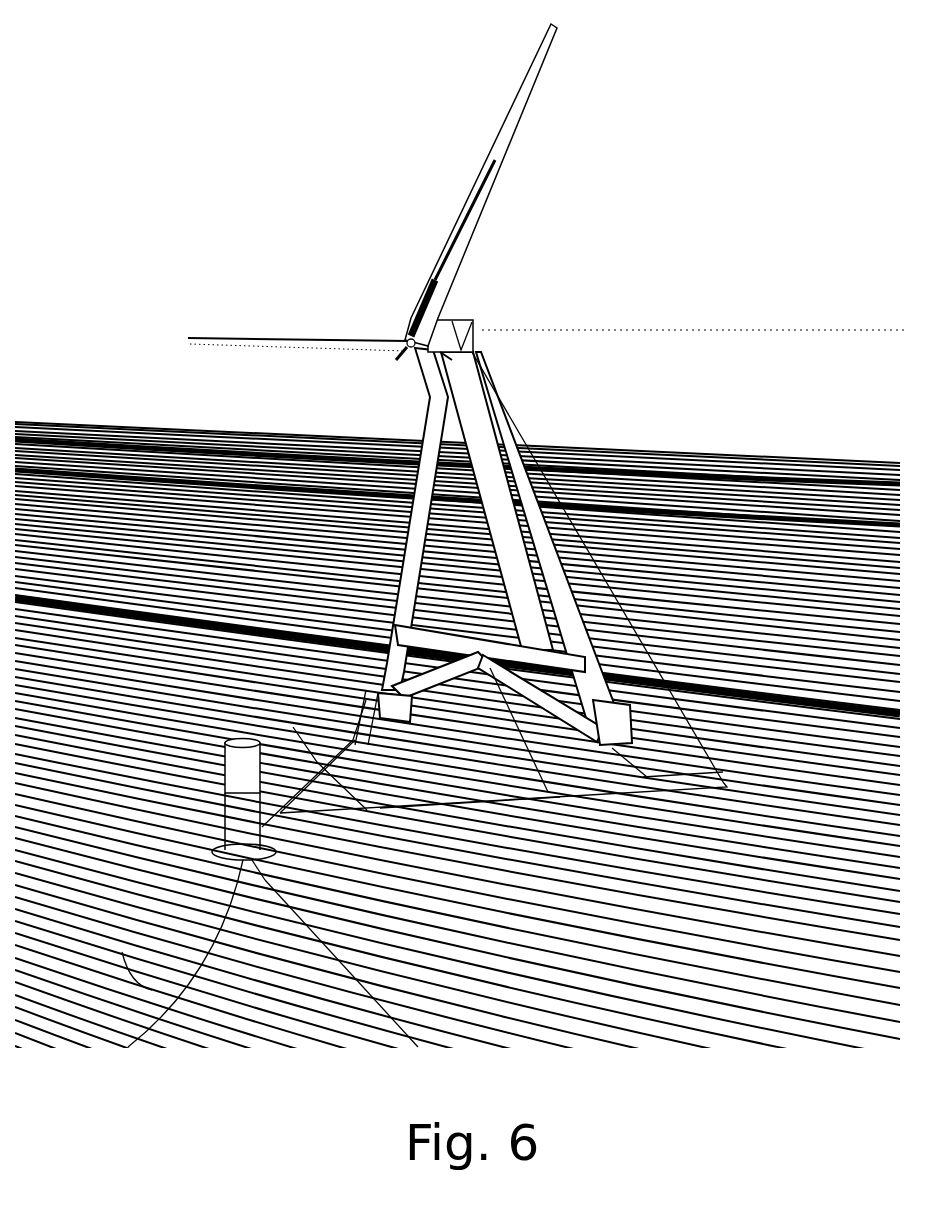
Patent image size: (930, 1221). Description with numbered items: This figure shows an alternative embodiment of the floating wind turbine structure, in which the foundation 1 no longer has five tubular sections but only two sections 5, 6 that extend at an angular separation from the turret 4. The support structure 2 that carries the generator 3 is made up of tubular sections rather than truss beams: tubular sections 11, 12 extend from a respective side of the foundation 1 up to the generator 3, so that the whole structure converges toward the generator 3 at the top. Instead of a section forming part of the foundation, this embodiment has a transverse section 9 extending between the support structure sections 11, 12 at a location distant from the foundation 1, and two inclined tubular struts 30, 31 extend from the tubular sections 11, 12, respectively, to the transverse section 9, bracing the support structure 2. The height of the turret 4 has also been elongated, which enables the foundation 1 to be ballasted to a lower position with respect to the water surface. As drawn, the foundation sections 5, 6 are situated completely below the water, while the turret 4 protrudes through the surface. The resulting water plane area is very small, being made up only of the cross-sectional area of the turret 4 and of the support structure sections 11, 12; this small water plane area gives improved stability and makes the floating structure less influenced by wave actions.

The foundation 1 is at (583, 800).
The support structure 2 is at (690, 392).
The generator 3 is at (473, 322).
The turret 4 is at (218, 828).
The foundation section 5 is at (318, 697).
The foundation section 6 is at (440, 822).
The transverse section 9 is at (448, 650).
The tubular section 11 is at (632, 680).
The tubular section 12 is at (390, 630).
The inclined tubular strut 30 is at (570, 704).
The inclined tubular strut 31 is at (448, 675).